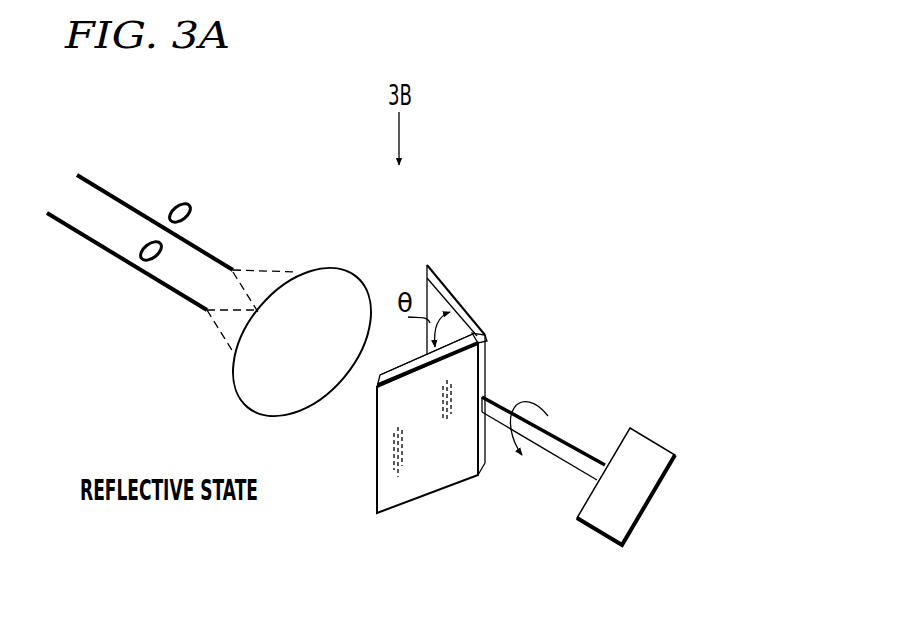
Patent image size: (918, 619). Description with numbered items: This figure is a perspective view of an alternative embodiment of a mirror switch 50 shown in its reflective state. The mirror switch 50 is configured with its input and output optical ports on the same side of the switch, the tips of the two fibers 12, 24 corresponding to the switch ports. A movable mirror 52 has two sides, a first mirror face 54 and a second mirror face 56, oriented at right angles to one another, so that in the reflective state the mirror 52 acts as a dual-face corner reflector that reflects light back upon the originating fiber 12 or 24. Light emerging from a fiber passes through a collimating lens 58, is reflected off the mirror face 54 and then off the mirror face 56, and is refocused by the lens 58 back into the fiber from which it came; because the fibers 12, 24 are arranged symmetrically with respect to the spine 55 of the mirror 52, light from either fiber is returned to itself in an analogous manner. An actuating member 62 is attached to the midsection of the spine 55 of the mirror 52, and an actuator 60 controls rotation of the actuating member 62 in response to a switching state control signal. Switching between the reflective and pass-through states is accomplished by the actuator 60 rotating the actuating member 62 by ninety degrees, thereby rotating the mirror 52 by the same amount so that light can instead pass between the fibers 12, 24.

The fiber 12 is at (100, 185).
The fiber 24 is at (70, 232).
The mirror switch 50 is at (598, 227).
The movable mirror 52 is at (452, 472).
The mirror face 54 is at (403, 365).
The spine 55 is at (485, 368).
The mirror face 56 is at (432, 292).
The collimating lens 58 is at (317, 351).
The actuator 60 is at (652, 453).
The actuating member 62 is at (563, 443).